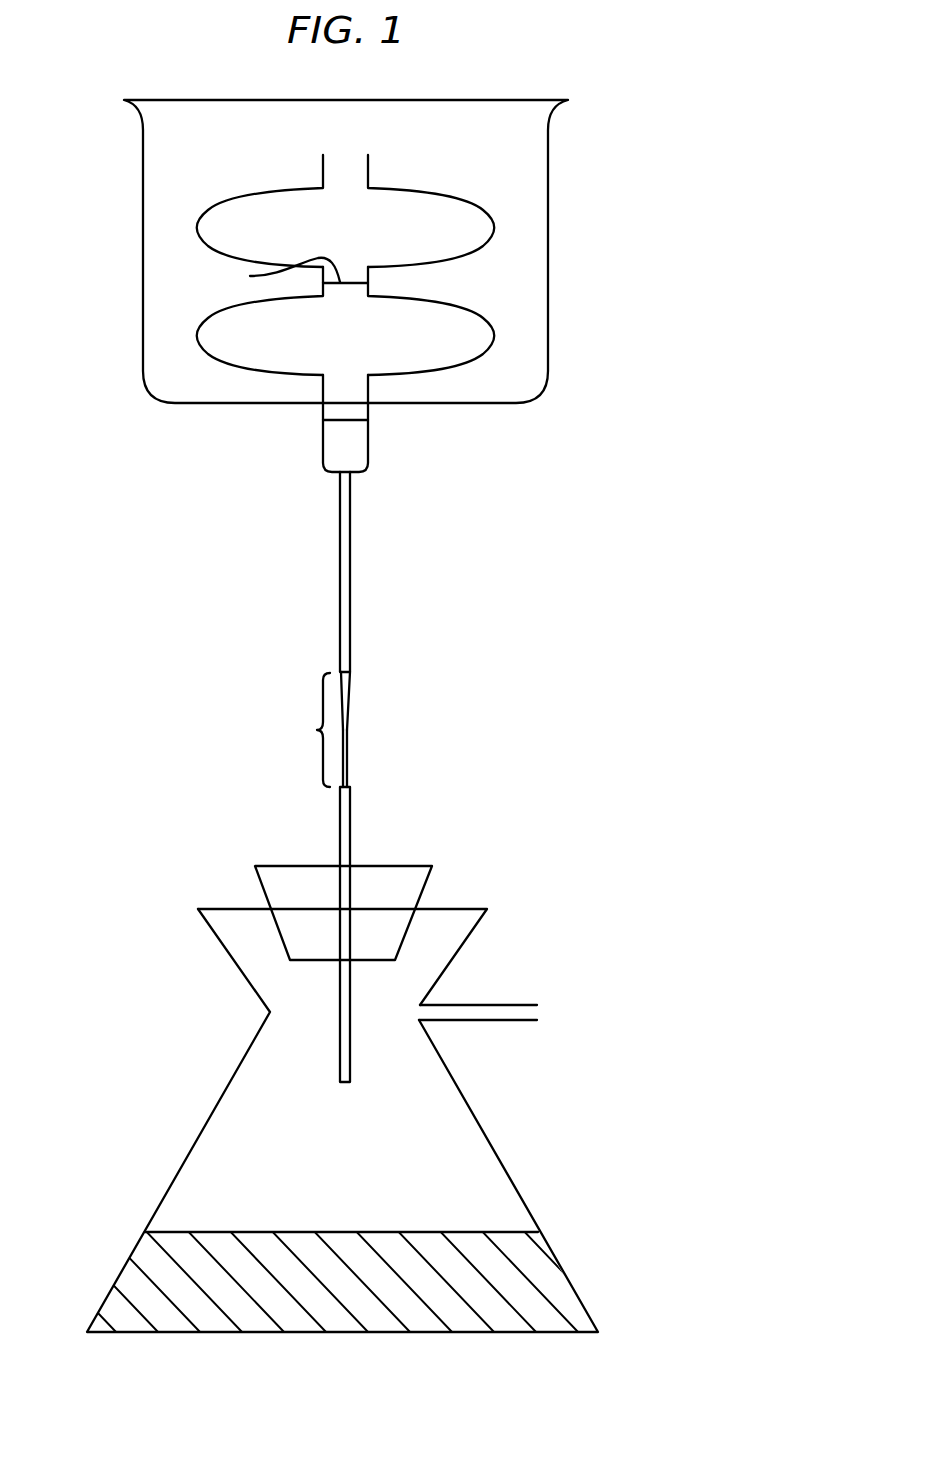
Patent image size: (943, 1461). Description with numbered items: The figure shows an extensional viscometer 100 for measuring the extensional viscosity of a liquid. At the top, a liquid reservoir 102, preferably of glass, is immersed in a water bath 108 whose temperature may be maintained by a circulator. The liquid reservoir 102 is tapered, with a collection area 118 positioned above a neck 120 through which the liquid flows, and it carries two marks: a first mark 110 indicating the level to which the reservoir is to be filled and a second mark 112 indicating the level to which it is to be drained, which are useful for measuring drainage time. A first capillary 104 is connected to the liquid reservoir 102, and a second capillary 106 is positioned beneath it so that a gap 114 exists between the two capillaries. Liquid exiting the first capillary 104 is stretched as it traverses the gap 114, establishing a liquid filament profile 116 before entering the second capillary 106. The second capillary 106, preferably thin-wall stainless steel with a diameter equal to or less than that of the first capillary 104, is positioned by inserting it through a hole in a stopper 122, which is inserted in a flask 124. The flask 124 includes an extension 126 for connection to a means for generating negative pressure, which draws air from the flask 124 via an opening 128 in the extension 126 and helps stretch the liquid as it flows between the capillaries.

The viscometer 100 is at (646, 244).
The liquid reservoir 102 is at (476, 208).
The first capillary 104 is at (350, 663).
The second capillary 106 is at (350, 795).
The water bath 108 is at (538, 332).
The first mark 110 is at (278, 272).
The second mark 112 is at (340, 422).
The gap 114 is at (316, 729).
The liquid filament profile 116 is at (349, 725).
The collection area 118 is at (472, 326).
The neck 120 is at (368, 388).
The stopper 122 is at (297, 937).
The flask 124 is at (466, 1157).
The extension 126 is at (507, 992).
The opening 128 is at (520, 1012).